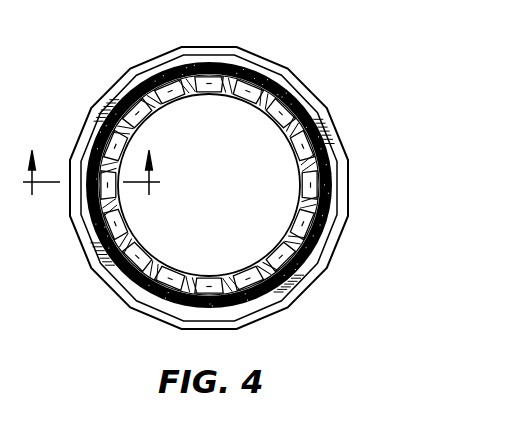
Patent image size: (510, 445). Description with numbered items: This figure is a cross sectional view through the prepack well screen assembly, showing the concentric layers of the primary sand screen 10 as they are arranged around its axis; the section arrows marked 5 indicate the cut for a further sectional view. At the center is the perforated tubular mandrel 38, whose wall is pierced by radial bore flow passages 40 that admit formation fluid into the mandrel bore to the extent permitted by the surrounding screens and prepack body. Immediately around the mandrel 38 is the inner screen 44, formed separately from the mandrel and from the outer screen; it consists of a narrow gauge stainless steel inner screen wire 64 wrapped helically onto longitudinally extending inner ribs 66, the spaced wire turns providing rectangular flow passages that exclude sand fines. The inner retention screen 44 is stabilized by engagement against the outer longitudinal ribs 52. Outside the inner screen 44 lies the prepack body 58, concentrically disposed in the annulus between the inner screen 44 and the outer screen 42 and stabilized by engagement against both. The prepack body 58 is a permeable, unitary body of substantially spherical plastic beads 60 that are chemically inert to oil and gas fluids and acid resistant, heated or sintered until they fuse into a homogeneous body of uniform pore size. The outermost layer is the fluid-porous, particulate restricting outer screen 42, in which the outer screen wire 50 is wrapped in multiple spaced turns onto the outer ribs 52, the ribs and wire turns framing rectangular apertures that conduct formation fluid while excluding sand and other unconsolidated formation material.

The primary sand screen 10 is at (238, 173).
The outer screen wire 50 is at (238, 173).
The outer ribs 52 is at (285, 84).
The spherical plastic beads 60 is at (318, 106).
The outer screen 42 is at (101, 104).
The inner screen 44 is at (209, 185).
The tubular mandrel 38 is at (303, 140).
The bore flow passages 40 is at (209, 185).
The inner screen wire 64 is at (271, 215).
The inner ribs 66 is at (302, 232).
The prepack body 58 is at (95, 252).
The section line 5- 5 is at (89, 181).